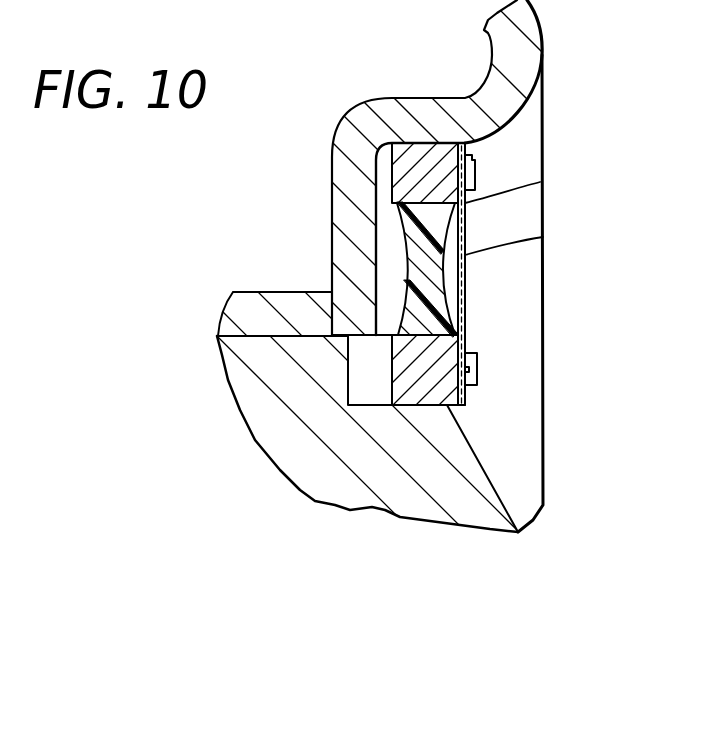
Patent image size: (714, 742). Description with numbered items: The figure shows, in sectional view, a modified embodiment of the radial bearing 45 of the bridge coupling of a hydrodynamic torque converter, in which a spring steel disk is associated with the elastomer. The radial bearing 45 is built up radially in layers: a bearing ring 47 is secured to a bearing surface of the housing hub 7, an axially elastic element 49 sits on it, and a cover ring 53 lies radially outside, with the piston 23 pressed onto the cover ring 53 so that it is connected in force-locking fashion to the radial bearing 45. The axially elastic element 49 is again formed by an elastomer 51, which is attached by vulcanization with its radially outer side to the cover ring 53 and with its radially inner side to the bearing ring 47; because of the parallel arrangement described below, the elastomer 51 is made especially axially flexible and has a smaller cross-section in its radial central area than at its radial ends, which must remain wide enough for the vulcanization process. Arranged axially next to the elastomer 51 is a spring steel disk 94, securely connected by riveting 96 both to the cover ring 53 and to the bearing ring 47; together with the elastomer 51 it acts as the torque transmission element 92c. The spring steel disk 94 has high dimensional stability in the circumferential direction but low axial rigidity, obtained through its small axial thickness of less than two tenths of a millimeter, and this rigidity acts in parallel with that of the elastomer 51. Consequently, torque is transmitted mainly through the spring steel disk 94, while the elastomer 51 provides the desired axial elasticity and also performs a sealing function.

The housing hub 7 is at (308, 467).
The piston 23 is at (417, 100).
The radial bearing 45 is at (377, 230).
The bearing ring 47 is at (440, 383).
The axially elastic element 49 is at (543, 237).
The elastomer 51 is at (433, 300).
The cover ring 53 is at (432, 147).
The torque transmission element 92c is at (465, 290).
The spring steel disk 94 is at (540, 182).
The riveting 96 is at (465, 147).